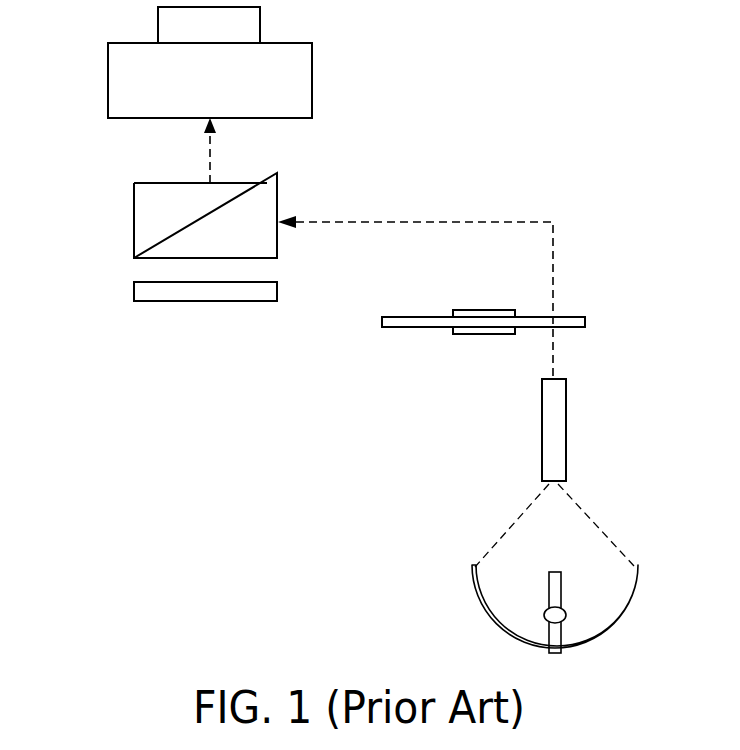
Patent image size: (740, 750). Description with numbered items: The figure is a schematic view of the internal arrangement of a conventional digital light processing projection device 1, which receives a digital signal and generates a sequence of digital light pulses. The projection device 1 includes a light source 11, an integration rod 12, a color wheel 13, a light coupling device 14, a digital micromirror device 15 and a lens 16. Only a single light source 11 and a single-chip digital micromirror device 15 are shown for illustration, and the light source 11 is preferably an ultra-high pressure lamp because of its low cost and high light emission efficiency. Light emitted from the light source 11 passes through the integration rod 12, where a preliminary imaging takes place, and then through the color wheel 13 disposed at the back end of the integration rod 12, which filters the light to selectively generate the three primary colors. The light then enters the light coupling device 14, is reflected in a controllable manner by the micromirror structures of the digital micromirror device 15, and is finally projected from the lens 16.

The projection device 1 is at (530, 96).
The light source 11 is at (627, 599).
The integration rod 12 is at (567, 429).
The color wheel 13 is at (586, 322).
The light coupling device 14 is at (134, 221).
The digital micromirror device 15 is at (134, 291).
The lens 16 is at (108, 81).